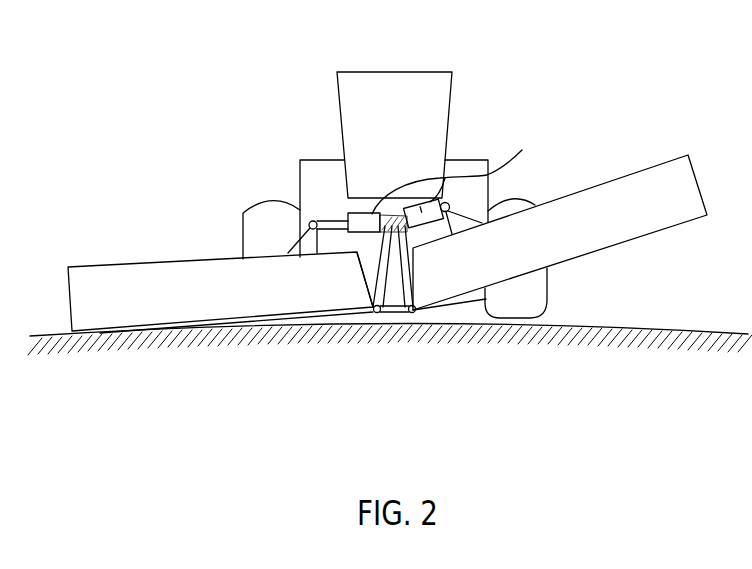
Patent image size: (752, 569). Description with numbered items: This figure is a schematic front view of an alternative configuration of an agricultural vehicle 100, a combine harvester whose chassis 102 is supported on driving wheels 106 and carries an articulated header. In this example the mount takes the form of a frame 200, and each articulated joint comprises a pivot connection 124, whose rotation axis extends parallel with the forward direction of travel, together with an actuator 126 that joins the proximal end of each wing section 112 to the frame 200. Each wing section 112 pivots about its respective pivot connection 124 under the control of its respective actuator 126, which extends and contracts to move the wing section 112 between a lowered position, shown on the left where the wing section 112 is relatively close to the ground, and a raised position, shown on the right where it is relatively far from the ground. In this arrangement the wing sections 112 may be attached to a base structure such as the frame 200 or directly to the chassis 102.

The agricultural vehicle 100 is at (480, 88).
The chassis 102 is at (313, 167).
The driving wheels 106 is at (261, 232).
The wing section 112 is at (107, 265).
The pivot connection 124 is at (375, 314).
The actuator 126 is at (446, 180).
The frame 200 is at (388, 313).